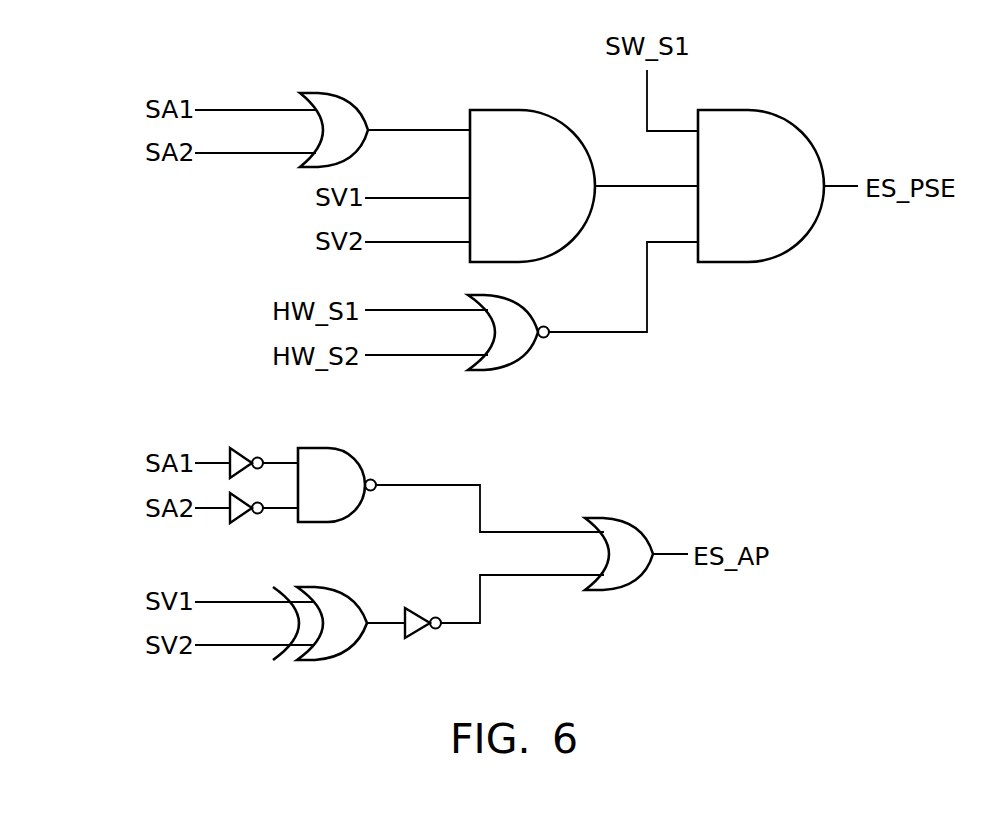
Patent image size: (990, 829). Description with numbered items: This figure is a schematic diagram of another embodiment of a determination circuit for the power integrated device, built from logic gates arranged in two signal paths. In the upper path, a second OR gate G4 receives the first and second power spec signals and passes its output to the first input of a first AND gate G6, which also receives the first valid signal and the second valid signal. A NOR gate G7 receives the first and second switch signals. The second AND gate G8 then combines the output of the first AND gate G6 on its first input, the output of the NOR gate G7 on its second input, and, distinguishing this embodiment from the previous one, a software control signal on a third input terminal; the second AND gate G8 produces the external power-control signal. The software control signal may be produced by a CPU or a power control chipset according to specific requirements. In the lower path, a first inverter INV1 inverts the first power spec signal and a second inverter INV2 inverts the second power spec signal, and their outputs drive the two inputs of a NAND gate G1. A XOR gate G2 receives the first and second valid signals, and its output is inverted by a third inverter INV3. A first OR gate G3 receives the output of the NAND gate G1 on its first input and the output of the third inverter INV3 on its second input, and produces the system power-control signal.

The NAND gate G1 is at (340, 448).
The XOR gate G2 is at (342, 587).
The first OR gate G3 is at (628, 518).
The second OR gate G4 is at (343, 93).
The first AND gate G6 is at (538, 118).
The NOR gate G7 is at (512, 370).
The second AND gate G8 is at (764, 116).
The first inverter INV1 is at (246, 456).
The second inverter INV2 is at (246, 514).
The third inverter INV3 is at (420, 630).